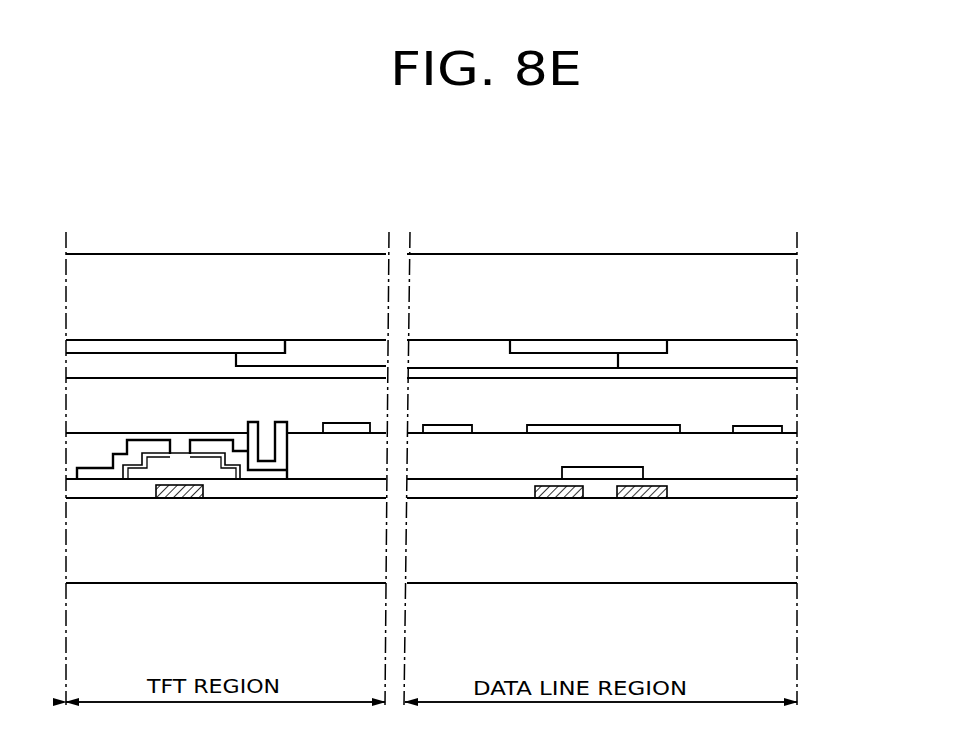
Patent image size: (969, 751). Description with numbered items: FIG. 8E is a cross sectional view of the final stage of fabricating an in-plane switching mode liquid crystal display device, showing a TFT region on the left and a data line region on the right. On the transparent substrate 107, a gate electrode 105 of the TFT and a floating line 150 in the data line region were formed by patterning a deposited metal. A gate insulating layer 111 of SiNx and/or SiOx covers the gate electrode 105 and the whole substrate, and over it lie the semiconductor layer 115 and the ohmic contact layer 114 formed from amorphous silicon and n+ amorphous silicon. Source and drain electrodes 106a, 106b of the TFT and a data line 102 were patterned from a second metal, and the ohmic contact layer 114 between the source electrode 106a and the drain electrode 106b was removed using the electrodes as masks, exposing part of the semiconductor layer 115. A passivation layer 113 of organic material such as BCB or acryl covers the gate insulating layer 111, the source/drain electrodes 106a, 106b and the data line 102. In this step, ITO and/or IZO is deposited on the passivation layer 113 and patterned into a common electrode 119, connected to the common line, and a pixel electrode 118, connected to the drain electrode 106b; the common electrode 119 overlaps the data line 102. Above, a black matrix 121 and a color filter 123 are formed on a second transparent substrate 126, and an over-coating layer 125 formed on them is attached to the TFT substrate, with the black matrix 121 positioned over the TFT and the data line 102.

The data line 102 is at (610, 473).
The gate electrode 105 is at (195, 500).
The source electrode 106a is at (90, 473).
The drain electrode 106b is at (278, 475).
The transparent substrate 107 is at (785, 555).
The gate insulating layer 111 is at (787, 490).
The passivation layer 113 is at (787, 450).
The ohmic contact layer 114 is at (132, 462).
The semiconductor layer 115 is at (175, 460).
The pixel electrode 118 is at (448, 430).
The common electrode 119 is at (575, 430).
The black matrix 121 is at (165, 342).
The color filter 123 is at (787, 352).
The over-coating layer 125 is at (790, 375).
The transparent substrate 126 is at (787, 287).
The floating line 150 is at (552, 500).